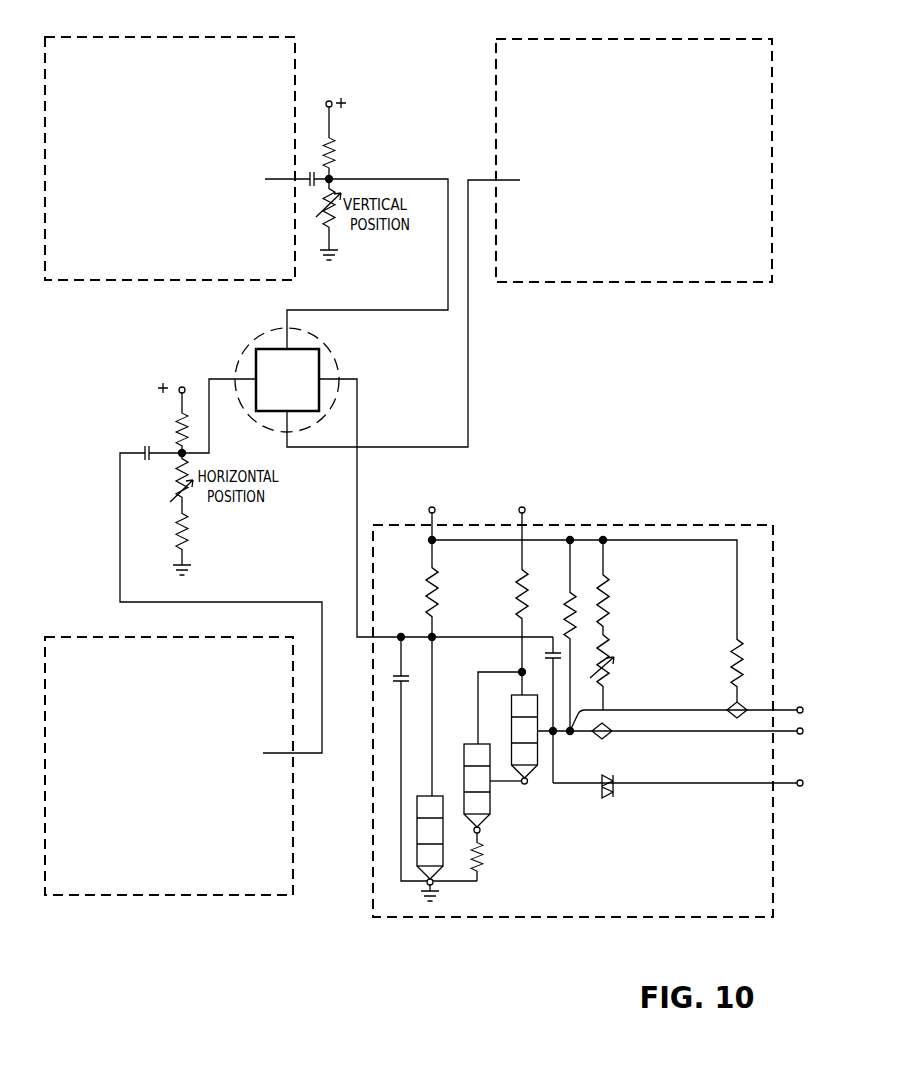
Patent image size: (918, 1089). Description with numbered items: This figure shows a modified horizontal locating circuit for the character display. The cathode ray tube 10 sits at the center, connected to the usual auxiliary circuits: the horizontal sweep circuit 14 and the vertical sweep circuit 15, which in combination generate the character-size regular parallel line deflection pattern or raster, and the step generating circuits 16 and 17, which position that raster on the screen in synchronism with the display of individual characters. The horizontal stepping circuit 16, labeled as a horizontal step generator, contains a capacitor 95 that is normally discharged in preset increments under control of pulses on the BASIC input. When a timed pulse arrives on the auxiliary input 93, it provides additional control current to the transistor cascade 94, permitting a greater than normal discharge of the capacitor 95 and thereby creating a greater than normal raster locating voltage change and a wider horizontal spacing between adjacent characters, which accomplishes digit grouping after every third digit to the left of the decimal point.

The cathode ray tube 10 is at (325, 338).
The horizontal sweep circuit 14 is at (85, 637).
The vertical sweep circuit 15 is at (84, 37).
The horizontal stepping circuit 16 is at (773, 525).
The step generating circuit 17 is at (772, 40).
The auxiliary input 93 is at (788, 710).
The transistor cascade 94 is at (541, 819).
The capacitor 95 is at (543, 647).